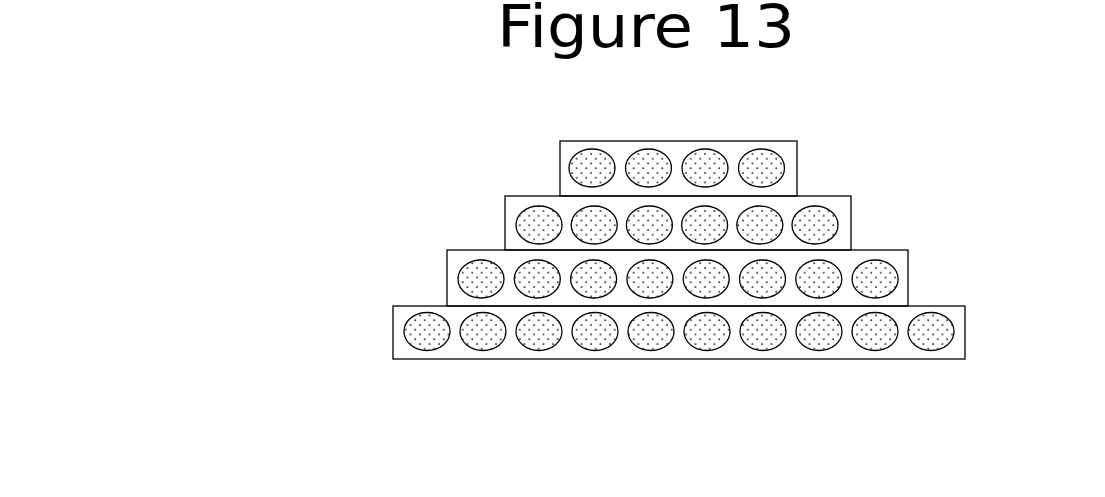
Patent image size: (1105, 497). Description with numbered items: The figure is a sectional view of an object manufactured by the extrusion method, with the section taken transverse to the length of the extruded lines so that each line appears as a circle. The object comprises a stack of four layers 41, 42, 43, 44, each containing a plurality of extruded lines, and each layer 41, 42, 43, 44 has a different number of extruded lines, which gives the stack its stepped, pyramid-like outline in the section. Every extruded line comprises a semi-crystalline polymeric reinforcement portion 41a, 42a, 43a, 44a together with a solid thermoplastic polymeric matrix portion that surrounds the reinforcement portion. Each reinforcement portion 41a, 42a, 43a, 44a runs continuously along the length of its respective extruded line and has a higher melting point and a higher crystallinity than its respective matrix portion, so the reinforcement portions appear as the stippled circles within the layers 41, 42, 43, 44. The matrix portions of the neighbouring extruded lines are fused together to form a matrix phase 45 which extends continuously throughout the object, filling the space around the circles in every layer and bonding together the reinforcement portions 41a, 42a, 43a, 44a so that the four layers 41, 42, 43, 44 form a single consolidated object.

The layer 41 is at (589, 307).
The reinforcement portion 41a is at (423, 325).
The layer 42 is at (757, 257).
The reinforcement portion 42a is at (877, 278).
The layer 43 is at (595, 200).
The reinforcement portion 43a is at (533, 220).
The layer 44 is at (749, 138).
The reinforcement portion 44a is at (763, 164).
The matrix phase 45 is at (622, 150).